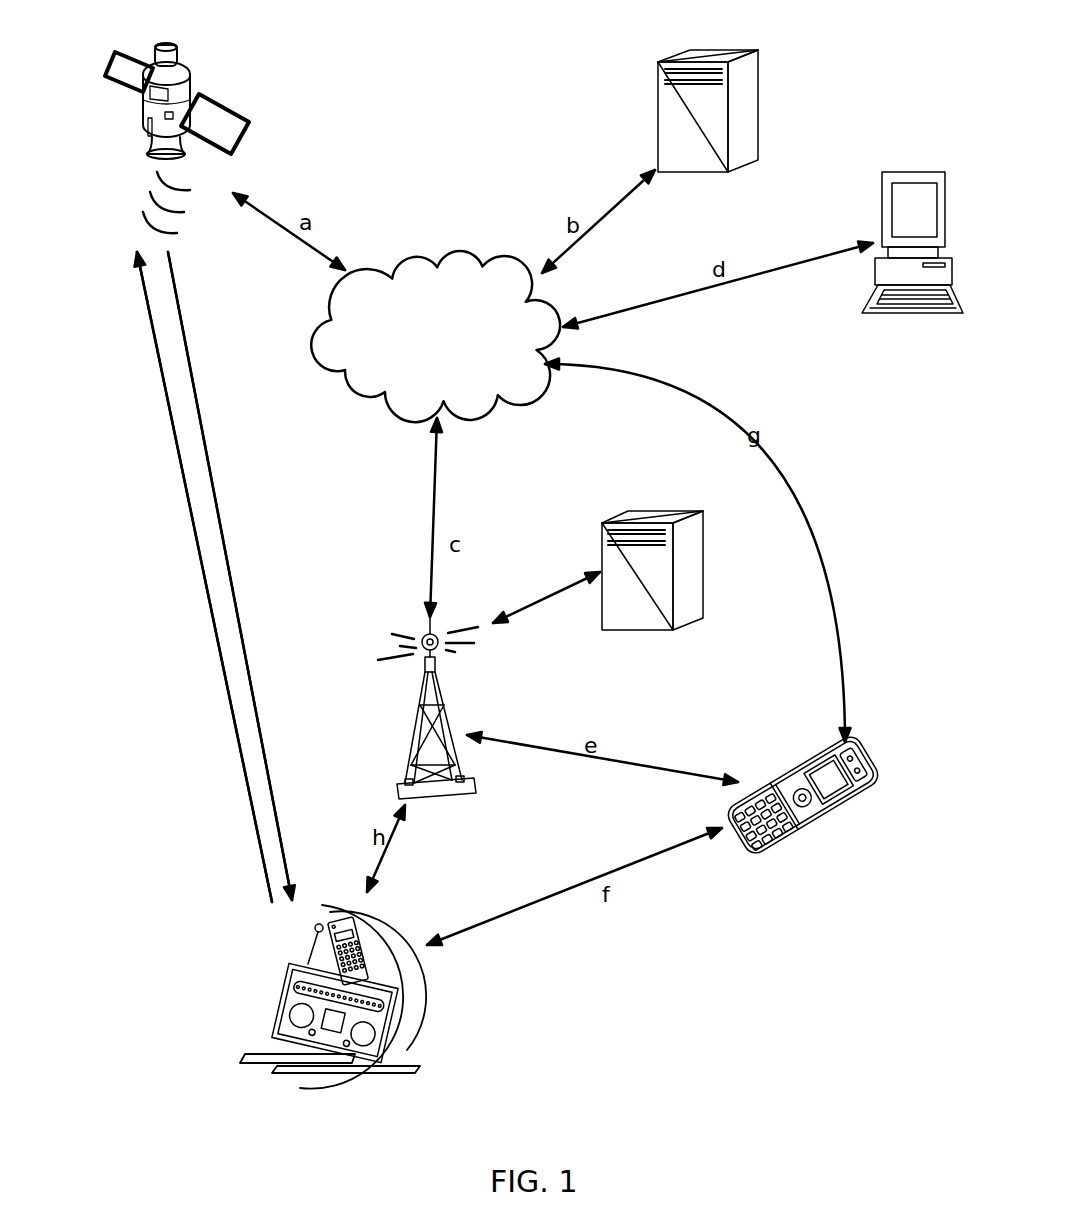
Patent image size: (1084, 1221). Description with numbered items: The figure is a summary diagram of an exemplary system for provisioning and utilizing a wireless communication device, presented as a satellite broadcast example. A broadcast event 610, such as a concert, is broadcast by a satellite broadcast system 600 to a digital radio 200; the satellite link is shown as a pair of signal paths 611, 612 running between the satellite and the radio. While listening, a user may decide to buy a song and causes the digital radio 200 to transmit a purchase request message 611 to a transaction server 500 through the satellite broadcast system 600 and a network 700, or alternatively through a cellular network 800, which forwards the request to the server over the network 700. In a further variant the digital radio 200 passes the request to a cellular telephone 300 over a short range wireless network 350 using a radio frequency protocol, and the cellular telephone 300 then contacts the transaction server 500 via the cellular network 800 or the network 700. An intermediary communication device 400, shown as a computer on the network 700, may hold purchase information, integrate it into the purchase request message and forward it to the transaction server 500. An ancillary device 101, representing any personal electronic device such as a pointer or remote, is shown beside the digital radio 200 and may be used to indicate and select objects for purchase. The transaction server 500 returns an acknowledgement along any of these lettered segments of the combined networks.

The ancillary device 101 is at (395, 922).
The digital radio 200 is at (421, 1018).
The cellular telephone 300 is at (853, 797).
The short range wireless network 350 is at (568, 884).
The intermediary communication device 400 is at (878, 313).
The transaction server 500 is at (762, 117).
The satellite broadcast system 600 is at (244, 128).
The broadcast event 610 is at (225, 548).
The purchase request message 611 is at (205, 589).
The downlink signal 612 is at (242, 648).
The network 700 is at (409, 349).
The cellular network 800 is at (420, 716).